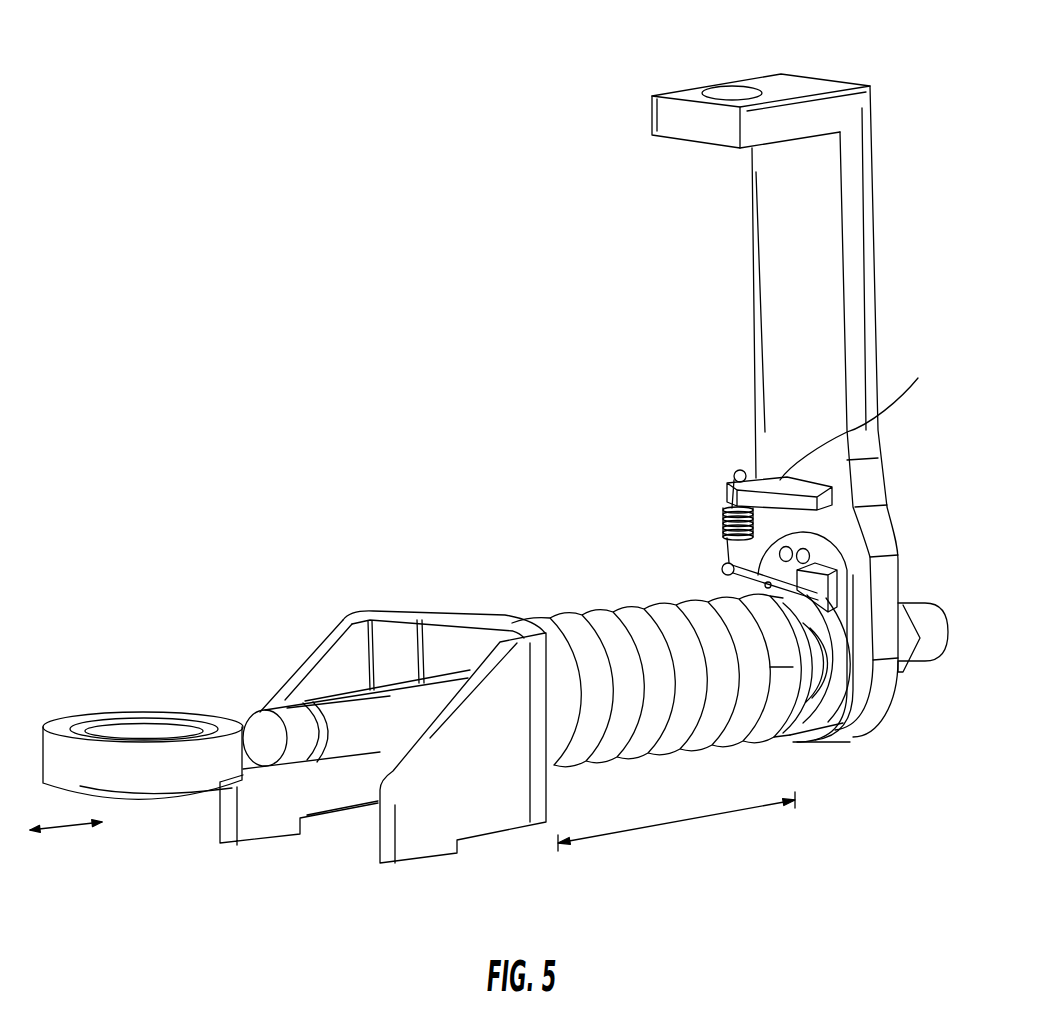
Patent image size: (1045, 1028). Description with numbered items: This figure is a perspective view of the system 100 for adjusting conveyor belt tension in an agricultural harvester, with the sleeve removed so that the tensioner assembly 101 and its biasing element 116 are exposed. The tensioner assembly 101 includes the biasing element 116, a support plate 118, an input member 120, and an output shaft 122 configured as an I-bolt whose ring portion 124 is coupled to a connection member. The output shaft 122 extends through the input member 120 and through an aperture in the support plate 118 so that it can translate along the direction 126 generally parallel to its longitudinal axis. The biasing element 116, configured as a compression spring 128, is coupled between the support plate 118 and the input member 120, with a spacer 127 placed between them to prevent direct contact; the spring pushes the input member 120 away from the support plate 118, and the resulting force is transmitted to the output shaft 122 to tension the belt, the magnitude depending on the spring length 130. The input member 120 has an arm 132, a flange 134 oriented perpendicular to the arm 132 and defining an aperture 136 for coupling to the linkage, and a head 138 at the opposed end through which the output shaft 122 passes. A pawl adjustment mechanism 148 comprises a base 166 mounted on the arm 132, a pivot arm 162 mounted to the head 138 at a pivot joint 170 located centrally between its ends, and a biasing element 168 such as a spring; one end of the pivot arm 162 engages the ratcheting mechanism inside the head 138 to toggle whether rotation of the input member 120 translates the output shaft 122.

The system 100 is at (290, 185).
The tensioner assembly 101 is at (425, 437).
The biasing element 116 is at (620, 609).
The support plate 118 is at (290, 680).
The input member 120 is at (877, 142).
The output shaft 122 is at (337, 757).
The ring portion 124 is at (115, 725).
The direction 126 is at (67, 825).
The spacer 127 is at (792, 715).
The compression spring 128 is at (565, 615).
The length 130 is at (693, 823).
The arm 132 is at (862, 282).
The flange 134 is at (688, 128).
The aperture 136 is at (733, 95).
The head 138 is at (857, 733).
The pawl adjustment mechanism 148 is at (733, 465).
The pivot arm 162 is at (818, 565).
The base 166 is at (855, 416).
The biasing element 168 is at (722, 515).
The pivot joint 170 is at (765, 583).